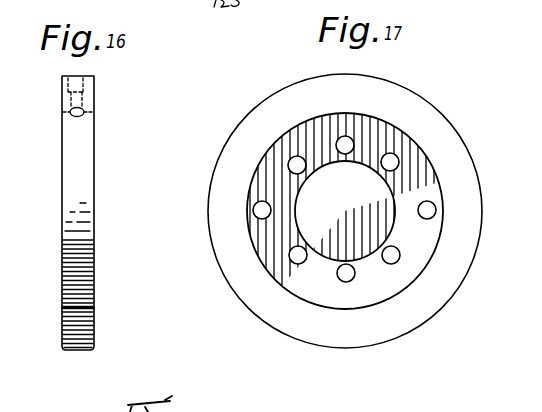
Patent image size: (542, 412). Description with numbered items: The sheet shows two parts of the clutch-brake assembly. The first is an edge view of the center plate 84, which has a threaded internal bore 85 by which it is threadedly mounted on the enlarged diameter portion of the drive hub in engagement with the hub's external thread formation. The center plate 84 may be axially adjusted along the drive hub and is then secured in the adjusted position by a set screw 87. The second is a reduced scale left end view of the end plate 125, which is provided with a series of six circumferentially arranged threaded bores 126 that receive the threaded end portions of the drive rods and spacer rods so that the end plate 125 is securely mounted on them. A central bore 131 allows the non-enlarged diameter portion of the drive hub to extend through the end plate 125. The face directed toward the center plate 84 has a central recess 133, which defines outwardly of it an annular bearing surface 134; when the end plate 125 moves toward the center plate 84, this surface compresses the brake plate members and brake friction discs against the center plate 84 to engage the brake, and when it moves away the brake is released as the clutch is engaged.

In FIG. 16, the center plate 84 is at (94, 178).
In FIG. 16, the threaded internal bore 85 is at (72, 300).
In FIG. 16, the set screw 87 is at (84, 85).
In FIG. 17, the end plate 125 is at (441, 321).
In FIG. 17, the threaded bores 126 is at (384, 156).
In FIG. 17, the central bore 131 is at (393, 206).
In FIG. 17, the central recess 133 is at (253, 211).
In FIG. 17, the annular bearing surface 134 is at (223, 158).